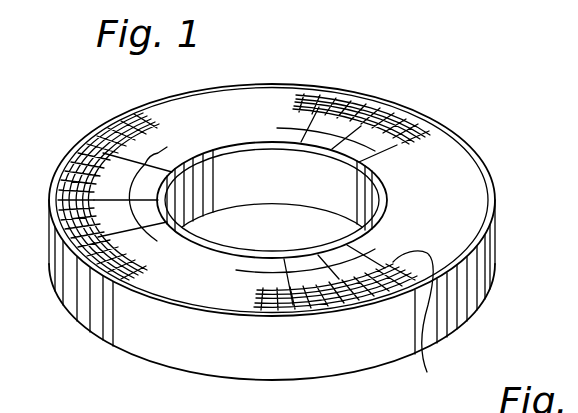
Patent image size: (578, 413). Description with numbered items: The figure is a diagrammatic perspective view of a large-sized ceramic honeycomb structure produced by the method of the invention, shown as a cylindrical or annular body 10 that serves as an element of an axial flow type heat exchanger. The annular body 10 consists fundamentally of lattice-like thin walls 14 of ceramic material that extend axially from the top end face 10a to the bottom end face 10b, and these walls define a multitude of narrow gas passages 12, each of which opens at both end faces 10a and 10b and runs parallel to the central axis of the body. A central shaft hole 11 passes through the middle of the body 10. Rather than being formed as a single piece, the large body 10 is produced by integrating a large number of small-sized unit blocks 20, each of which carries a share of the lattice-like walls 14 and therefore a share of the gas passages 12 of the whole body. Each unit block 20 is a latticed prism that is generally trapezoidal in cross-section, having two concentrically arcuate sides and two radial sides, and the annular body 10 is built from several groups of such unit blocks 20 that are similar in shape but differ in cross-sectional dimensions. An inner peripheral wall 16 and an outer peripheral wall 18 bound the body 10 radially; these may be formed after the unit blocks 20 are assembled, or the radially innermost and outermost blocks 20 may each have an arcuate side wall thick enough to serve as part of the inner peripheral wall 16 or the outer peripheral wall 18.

The annular body 10 is at (505, 192).
The top end face 10a is at (428, 323).
The bottom end face 10b is at (362, 368).
The central shaft hole 11 is at (317, 218).
The gas passages 12 is at (410, 110).
The lattice-like thin walls 14 is at (303, 302).
The inner peripheral wall 16 is at (229, 186).
The outer peripheral wall 18 is at (118, 320).
The unit blocks 20 is at (162, 166).